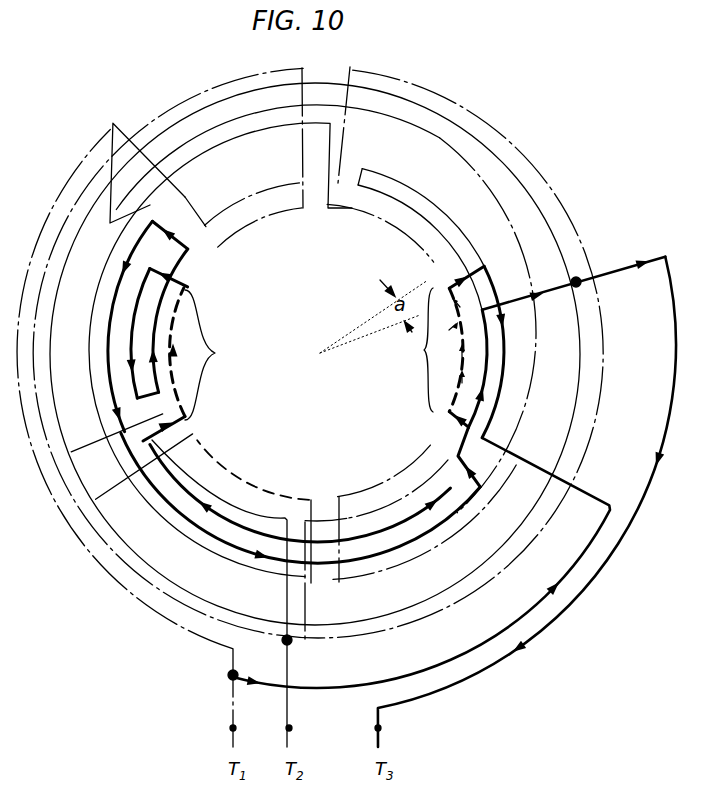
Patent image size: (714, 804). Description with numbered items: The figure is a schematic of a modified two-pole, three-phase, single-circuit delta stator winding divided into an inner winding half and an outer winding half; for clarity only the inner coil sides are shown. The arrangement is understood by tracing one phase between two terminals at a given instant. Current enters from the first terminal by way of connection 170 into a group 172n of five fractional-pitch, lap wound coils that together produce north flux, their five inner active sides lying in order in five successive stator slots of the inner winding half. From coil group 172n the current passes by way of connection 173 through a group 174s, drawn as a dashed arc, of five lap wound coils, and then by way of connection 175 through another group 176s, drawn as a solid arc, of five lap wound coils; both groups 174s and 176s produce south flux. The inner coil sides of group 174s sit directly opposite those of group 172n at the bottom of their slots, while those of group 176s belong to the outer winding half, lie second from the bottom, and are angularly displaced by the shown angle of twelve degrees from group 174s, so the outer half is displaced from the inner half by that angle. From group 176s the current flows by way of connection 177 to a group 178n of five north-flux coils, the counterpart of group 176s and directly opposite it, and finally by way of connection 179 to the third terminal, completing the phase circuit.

The connection 170 is at (502, 444).
The group of five fractional-pitch lap wound coils 172n is at (424, 350).
The connection 173 is at (192, 421).
The group of five fractional-pitch lap wound coils 174s is at (222, 355).
The connection 175 is at (181, 281).
The group of five fractional-pitch lap wound coils 176s is at (155, 380).
The connection 177 is at (178, 210).
The group of five coils 178n is at (488, 369).
The connection 179 is at (512, 302).